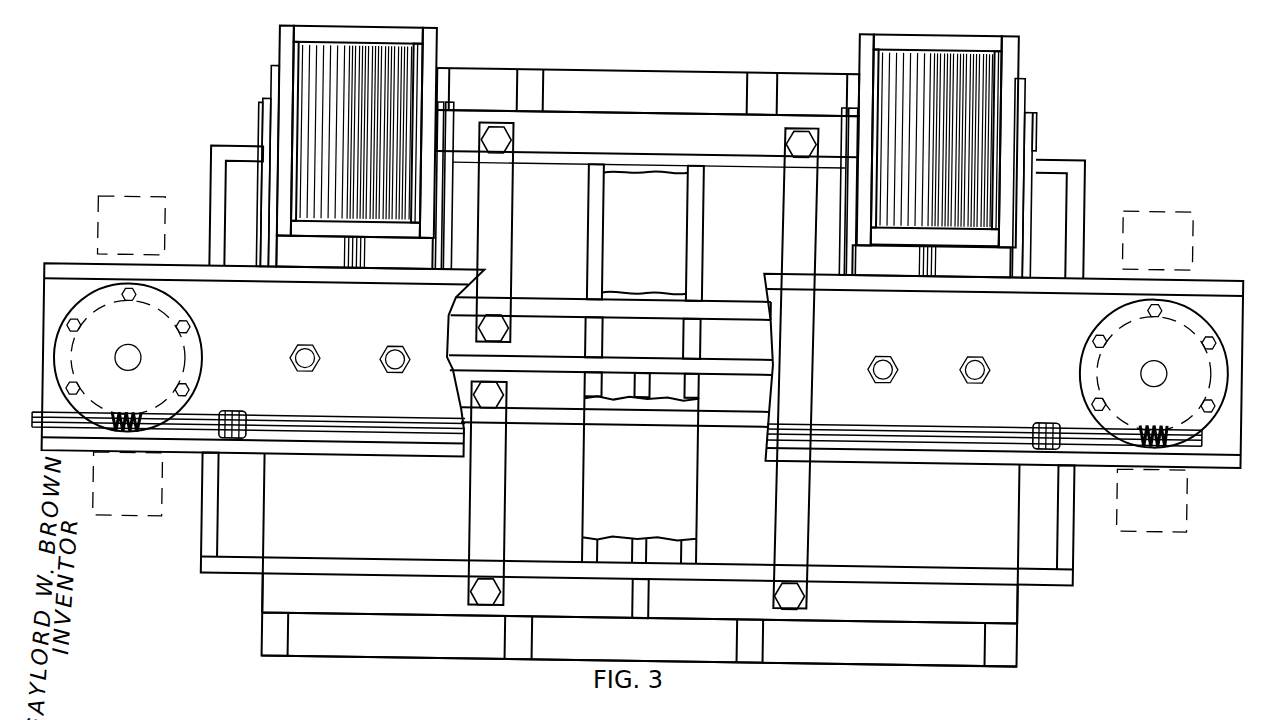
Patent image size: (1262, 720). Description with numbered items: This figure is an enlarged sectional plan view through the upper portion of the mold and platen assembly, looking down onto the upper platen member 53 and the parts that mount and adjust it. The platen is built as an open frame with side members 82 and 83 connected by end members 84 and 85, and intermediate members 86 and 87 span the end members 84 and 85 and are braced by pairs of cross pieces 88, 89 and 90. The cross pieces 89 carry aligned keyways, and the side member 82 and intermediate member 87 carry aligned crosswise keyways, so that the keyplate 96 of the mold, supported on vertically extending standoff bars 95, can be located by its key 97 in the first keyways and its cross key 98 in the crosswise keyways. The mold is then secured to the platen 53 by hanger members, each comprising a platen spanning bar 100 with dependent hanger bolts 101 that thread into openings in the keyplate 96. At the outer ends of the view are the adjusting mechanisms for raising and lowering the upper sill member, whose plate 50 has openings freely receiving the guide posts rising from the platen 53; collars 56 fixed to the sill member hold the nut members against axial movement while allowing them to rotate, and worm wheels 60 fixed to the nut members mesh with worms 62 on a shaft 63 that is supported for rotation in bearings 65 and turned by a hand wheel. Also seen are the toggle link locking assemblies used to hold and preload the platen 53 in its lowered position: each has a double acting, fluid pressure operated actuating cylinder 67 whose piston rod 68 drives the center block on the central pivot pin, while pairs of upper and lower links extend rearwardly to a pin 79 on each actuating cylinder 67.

The plate 50 is at (650, 463).
The upper platen member 53 is at (1064, 158).
The collars 56 is at (200, 389).
The worm wheels 60 is at (185, 362).
The worms 62 is at (118, 418).
The shaft 63 is at (884, 428).
The bearings 65 is at (246, 418).
The actuating cylinder 67 is at (326, 48).
The piston rod 68 is at (357, 261).
The pin 79 is at (255, 124).
The side member 82 is at (404, 580).
The side member 83 is at (567, 154).
The end member 84 is at (205, 490).
The end member 85 is at (1076, 555).
The intermediate member 86 is at (538, 300).
The intermediate member 87 is at (545, 425).
The cross pieces 88 is at (586, 172).
The cross pieces 89 is at (603, 325).
The cross pieces 90 is at (585, 542).
The standoff bars 95 is at (292, 646).
The keyplate 96 is at (880, 620).
The key 97 is at (500, 362).
The cross key 98 is at (636, 598).
The platen spanning bar 100 is at (510, 216).
The hanger bolts 101 is at (510, 138).